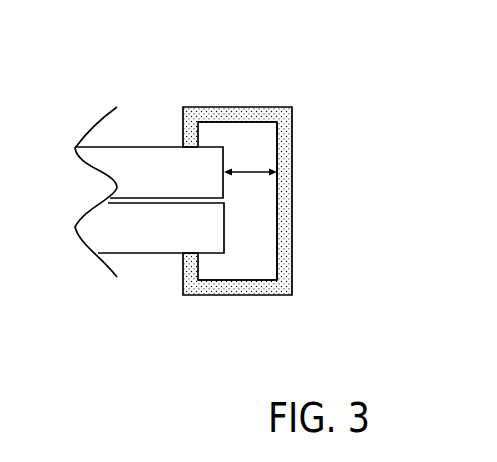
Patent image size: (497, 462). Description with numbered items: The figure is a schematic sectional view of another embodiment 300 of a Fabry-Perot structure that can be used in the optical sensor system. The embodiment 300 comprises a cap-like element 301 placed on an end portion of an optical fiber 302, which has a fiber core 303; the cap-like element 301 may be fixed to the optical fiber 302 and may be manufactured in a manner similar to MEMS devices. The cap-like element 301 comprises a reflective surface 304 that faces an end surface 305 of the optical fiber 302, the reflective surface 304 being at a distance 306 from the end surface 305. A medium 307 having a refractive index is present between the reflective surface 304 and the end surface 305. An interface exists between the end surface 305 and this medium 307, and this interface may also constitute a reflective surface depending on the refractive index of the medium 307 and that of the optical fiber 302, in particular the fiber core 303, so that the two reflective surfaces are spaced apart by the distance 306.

The embodiment of a Fabry-Perot structure 300 is at (59, 42).
The cap-like element 301 is at (237, 242).
The optical fiber 302 is at (149, 138).
The fiber core 303 is at (149, 232).
The reflective surface 304 is at (237, 253).
The end surface 305 is at (237, 107).
The distance 306 is at (250, 201).
The medium 307 is at (304, 191).